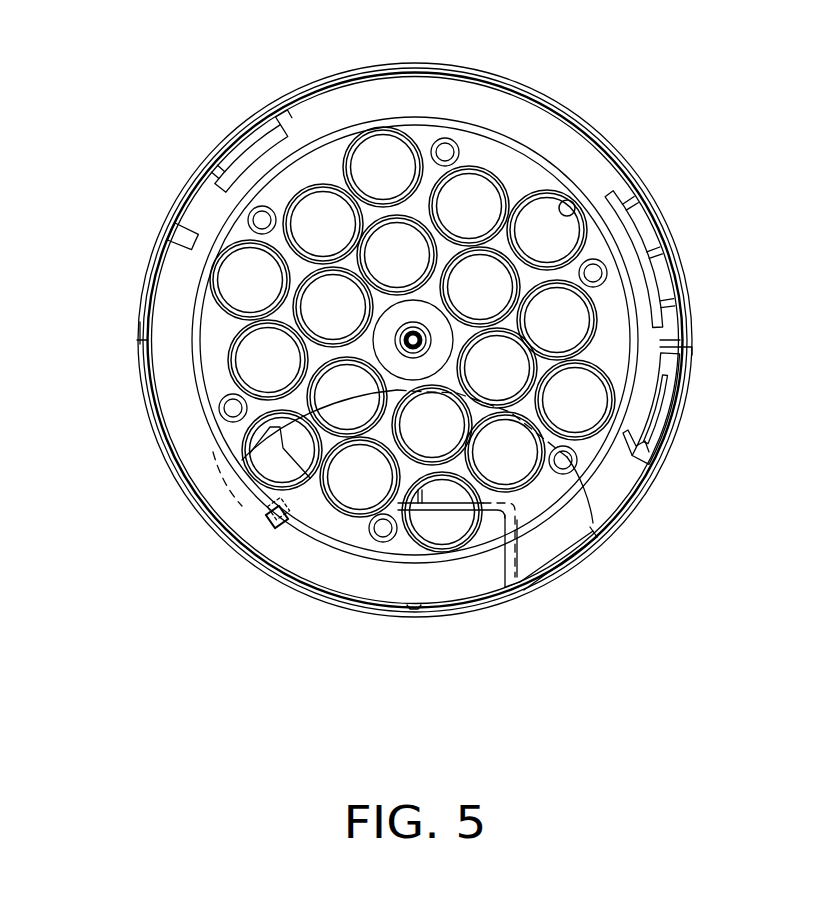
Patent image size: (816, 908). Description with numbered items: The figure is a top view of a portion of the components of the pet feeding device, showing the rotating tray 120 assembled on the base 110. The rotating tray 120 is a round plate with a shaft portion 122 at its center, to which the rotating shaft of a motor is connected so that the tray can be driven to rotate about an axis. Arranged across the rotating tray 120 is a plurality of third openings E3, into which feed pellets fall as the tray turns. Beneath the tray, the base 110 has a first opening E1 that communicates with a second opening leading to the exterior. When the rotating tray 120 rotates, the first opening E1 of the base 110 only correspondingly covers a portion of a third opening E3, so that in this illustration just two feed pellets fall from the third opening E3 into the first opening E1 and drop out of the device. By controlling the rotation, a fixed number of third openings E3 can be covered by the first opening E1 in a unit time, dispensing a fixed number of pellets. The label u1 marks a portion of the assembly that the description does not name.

The base 110 is at (190, 327).
The rotating tray 120 is at (192, 334).
The shaft portion 122 is at (402, 313).
The light emitting unit u1 is at (525, 177).
The first opening E1 is at (379, 481).
The third opening E3 is at (245, 267).